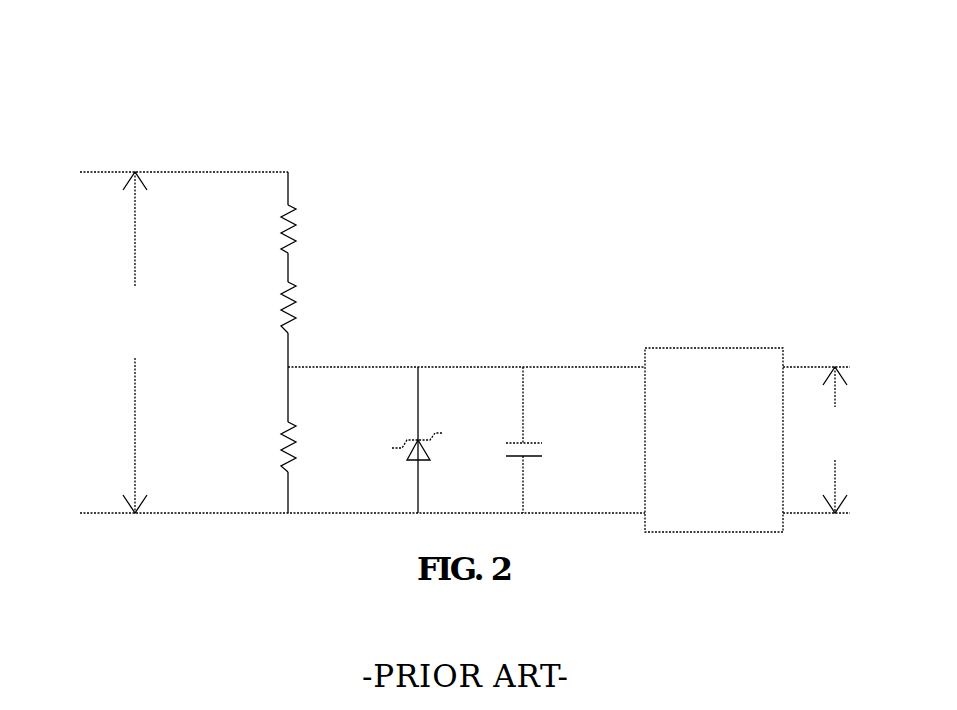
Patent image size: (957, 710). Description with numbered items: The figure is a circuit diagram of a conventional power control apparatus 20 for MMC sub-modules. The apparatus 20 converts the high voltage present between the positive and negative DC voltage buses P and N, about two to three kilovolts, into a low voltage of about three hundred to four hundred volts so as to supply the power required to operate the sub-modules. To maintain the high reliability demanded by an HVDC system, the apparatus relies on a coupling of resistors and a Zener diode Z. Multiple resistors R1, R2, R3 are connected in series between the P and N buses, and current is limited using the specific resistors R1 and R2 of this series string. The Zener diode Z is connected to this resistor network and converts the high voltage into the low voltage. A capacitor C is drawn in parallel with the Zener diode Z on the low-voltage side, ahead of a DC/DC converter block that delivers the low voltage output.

The power control apparatus 20 is at (518, 155).
The resistor R1 is at (304, 229).
The resistor R2 is at (304, 307).
The resistor R3 is at (304, 447).
The Zener diode Z is at (421, 440).
The capacitor C is at (533, 440).